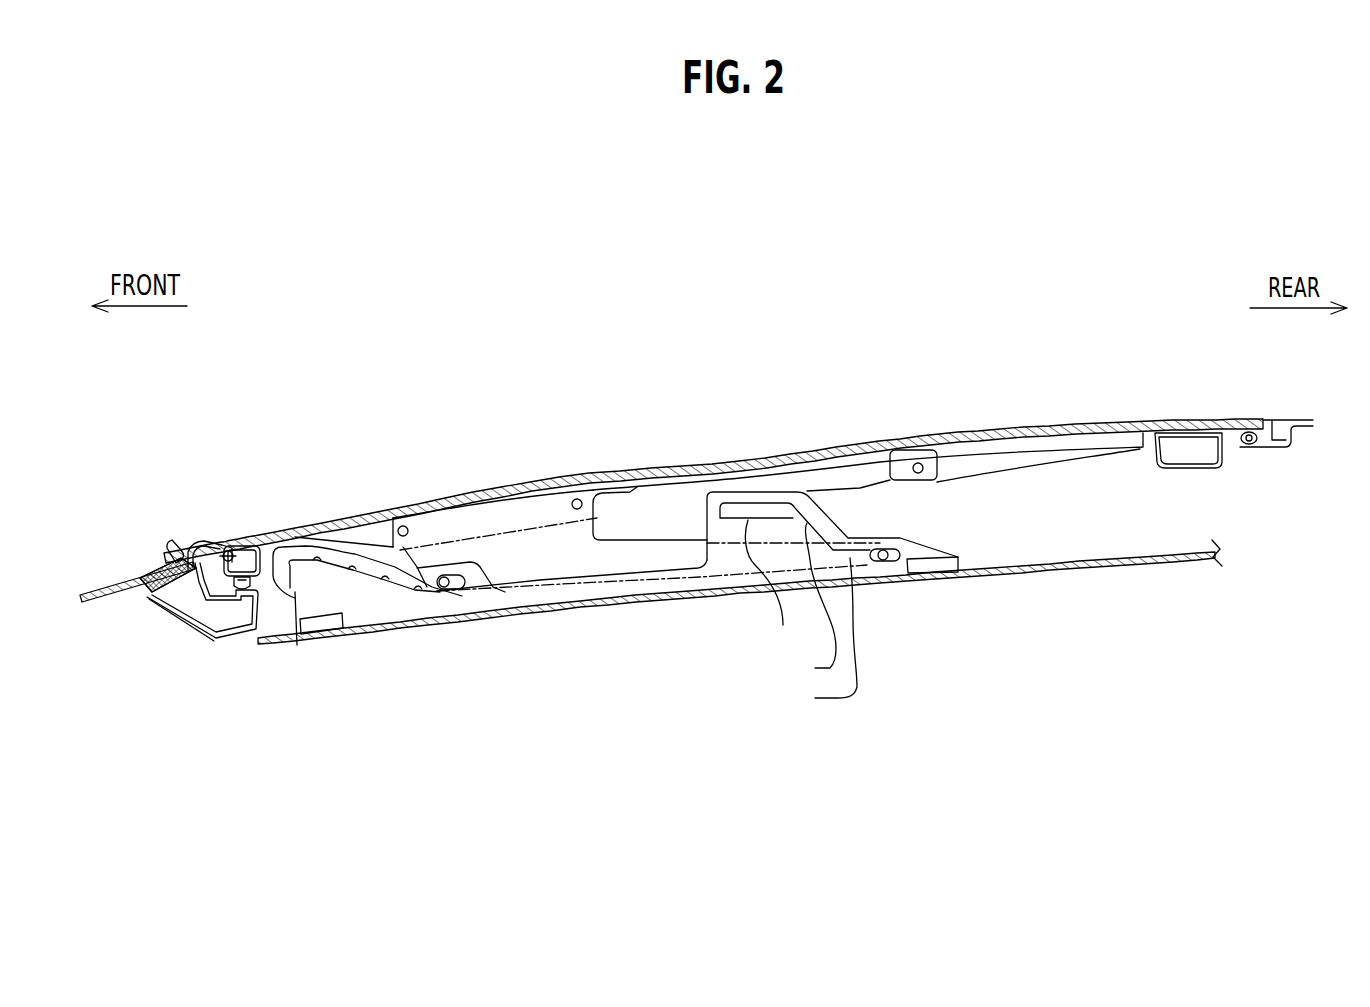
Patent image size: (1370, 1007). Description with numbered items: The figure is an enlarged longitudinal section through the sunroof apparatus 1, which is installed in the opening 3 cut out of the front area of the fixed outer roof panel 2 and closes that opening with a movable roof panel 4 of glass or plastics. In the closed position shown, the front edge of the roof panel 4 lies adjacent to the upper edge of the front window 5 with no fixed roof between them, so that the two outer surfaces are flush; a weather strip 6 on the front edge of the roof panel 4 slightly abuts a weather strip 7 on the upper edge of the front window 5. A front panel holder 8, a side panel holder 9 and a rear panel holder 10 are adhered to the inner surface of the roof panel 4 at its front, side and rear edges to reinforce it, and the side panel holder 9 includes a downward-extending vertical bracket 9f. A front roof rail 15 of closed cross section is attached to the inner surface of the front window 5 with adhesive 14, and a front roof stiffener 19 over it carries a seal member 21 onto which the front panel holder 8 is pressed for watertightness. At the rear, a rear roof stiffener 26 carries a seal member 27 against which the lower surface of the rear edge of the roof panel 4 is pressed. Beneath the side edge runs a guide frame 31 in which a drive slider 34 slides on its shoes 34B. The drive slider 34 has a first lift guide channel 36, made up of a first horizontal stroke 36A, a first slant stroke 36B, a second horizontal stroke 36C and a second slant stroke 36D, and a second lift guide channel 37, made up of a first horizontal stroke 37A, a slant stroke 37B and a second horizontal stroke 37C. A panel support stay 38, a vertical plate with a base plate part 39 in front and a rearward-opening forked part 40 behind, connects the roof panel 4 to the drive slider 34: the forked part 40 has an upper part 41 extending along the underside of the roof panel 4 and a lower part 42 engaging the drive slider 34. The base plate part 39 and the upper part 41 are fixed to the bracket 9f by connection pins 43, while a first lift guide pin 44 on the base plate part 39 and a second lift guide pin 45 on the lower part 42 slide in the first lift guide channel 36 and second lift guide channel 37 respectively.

The sunroof apparatus 1 is at (430, 420).
The outer roof panel 2 is at (1296, 420).
The opening 3 is at (1270, 420).
The roof panel 4 is at (985, 430).
The front window 5 is at (132, 588).
The weather strip 6 is at (211, 541).
The weather strip 7 is at (178, 540).
The front panel holder 8 is at (254, 545).
The side panel holder 9 is at (1056, 446).
The bracket 9f is at (1107, 446).
The rear panel holder 10 is at (1182, 468).
The adhesive 14 is at (142, 568).
The front roof rail 15 is at (163, 610).
The front roof stiffener 19 is at (210, 584).
The seal member 21 is at (253, 588).
The rear roof stiffener 26 is at (1290, 448).
The seal member 27 is at (1247, 446).
The guide frame 31 is at (1113, 566).
The drive slider 34 is at (587, 585).
The shoe 34B is at (318, 626).
The first lift guide channel 36 is at (385, 585).
The first horizontal stroke 36A is at (418, 587).
The first slant stroke 36B is at (385, 577).
The second horizontal stroke 36C is at (352, 567).
The second slant stroke 36D is at (317, 558).
The second lift guide channel 37 is at (765, 622).
The first horizontal stroke 37A is at (813, 635).
The slant stroke 37B is at (802, 602).
The second horizontal stroke 37C is at (780, 587).
The panel support stay 38 is at (452, 525).
The base plate part 39 is at (508, 514).
The forked part 40 is at (648, 512).
The upper part 41 is at (805, 468).
The lower part 42 is at (723, 560).
The connection pin 43 is at (403, 526).
The first lift guide pin 44 is at (453, 592).
The second lift guide pin 45 is at (885, 561).